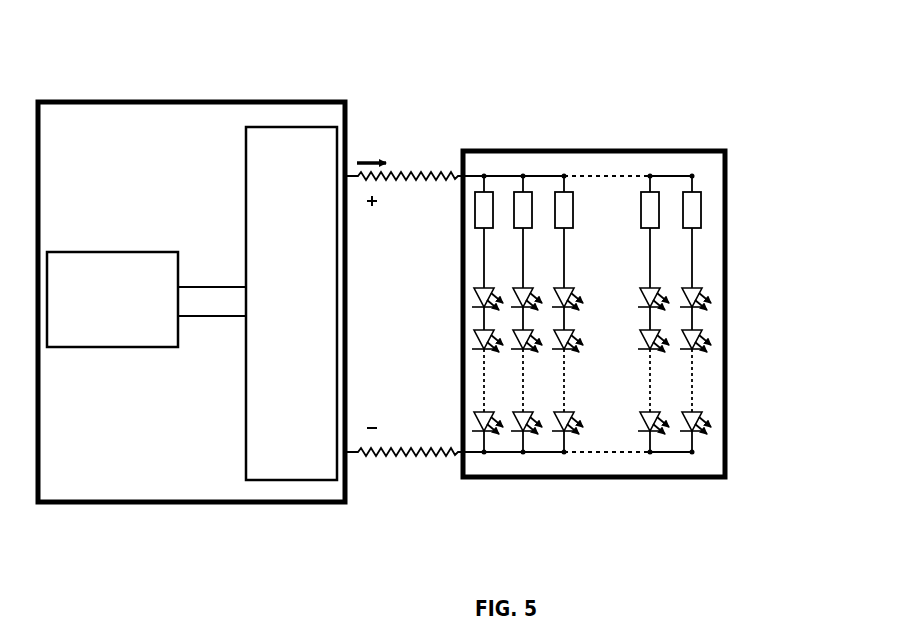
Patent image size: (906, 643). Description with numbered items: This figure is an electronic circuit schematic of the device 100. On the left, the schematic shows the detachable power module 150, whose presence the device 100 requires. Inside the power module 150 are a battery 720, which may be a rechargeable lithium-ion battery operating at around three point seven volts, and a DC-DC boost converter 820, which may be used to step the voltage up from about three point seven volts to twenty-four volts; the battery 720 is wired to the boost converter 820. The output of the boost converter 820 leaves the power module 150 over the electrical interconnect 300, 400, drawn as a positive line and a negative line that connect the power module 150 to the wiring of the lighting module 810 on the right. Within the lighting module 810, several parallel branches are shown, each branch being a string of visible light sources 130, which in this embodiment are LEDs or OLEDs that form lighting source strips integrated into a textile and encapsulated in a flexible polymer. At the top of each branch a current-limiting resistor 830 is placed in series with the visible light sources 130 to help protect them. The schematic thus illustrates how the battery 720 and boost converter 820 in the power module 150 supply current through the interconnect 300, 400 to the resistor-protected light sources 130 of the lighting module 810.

The device 100 is at (109, 87).
The detachable power module 150 is at (191, 302).
The battery 720 is at (146, 299).
The DC-DC Boost Converter 820 is at (291, 303).
The electrical interconnect 300 is at (405, 336).
The electrical interconnect 400 is at (404, 442).
The lighting module 810 is at (642, 287).
The current-limiting resistor 830 is at (571, 205).
The visible light sources 130 is at (693, 302).